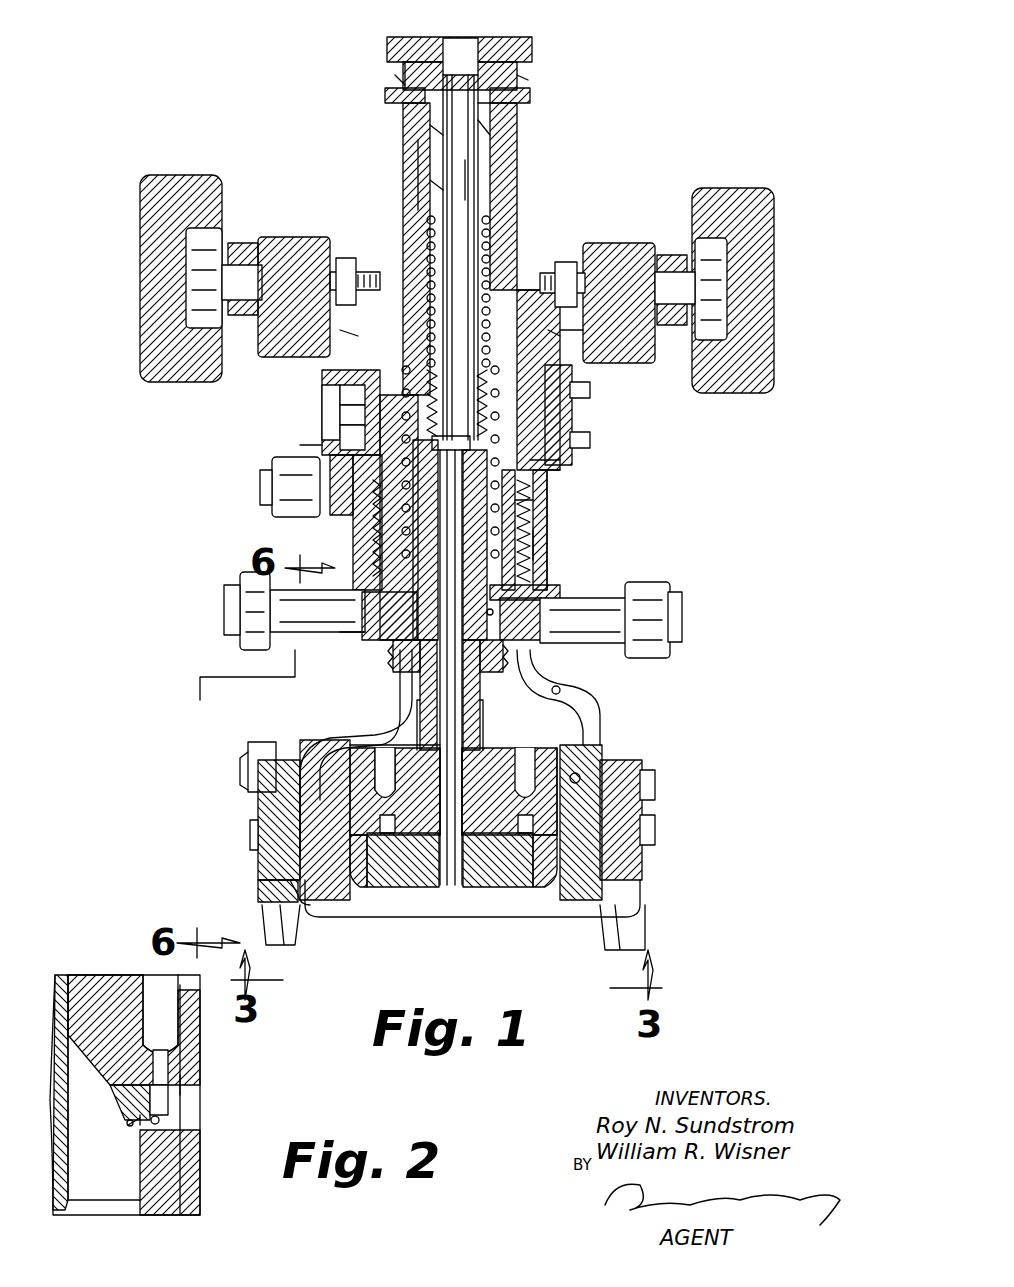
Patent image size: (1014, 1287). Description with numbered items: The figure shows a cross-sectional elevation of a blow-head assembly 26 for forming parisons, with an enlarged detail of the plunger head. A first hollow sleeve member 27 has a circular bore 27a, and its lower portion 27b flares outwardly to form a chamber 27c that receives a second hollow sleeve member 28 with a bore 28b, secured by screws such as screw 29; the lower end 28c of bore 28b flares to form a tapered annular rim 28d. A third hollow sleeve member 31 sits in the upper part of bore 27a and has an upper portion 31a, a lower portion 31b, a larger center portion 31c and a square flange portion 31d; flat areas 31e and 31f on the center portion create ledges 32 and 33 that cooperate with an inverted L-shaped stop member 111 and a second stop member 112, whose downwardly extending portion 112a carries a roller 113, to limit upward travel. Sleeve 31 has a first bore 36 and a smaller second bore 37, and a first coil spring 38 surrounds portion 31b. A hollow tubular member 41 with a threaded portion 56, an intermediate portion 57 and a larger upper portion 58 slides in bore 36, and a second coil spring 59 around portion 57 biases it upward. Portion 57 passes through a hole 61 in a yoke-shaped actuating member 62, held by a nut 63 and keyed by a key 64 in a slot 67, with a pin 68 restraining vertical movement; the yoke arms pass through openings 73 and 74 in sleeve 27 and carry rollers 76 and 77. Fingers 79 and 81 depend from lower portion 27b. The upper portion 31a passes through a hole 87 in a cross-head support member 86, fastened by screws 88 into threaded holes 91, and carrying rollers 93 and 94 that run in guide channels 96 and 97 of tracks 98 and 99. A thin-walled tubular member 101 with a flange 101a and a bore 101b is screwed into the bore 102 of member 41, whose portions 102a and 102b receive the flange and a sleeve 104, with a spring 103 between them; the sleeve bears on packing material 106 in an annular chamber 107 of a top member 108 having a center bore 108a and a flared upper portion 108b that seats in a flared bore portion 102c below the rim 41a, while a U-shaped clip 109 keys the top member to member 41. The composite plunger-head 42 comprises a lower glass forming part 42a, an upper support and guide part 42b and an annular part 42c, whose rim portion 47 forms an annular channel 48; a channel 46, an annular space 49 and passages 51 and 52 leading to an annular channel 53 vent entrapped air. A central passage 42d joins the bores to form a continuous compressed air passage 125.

In FIG. 1, the compressed air passage 125 is at (463, 55).
In FIG. 1, the top member 108 is at (532, 45).
In FIG. 1, the center bore 108a is at (492, 110).
In FIG. 1, the flared upper portion 108b is at (418, 60).
In FIG. 1, the U-shaped clip 109 is at (530, 96).
In FIG. 1, the hollow tubular member 41 is at (520, 208).
In FIG. 1, the rim 41a is at (398, 78).
In FIG. 1, the bore 102 is at (318, 445).
In FIG. 1, the bore portion 102a is at (427, 245).
In FIG. 1, the bore portion 102b is at (418, 170).
In FIG. 1, the flared bore portion 102c is at (525, 78).
In FIG. 1, the packing material 106 is at (495, 140).
In FIG. 1, the thin walled tubular member 101 is at (478, 175).
In FIG. 1, the annular flange 101a is at (345, 368).
In FIG. 1, the bore 101b is at (443, 190).
In FIG. 1, the sleeve 104 is at (485, 183).
In FIG. 1, the annular chamber 107 is at (430, 135).
In FIG. 1, the compressible spring 103 is at (427, 228).
In FIG. 1, the inverted L-shaped stop member 111 is at (530, 422).
In FIG. 1, the upper portion 58 is at (512, 232).
In FIG. 1, the third hollow sleeve member 31 is at (550, 440).
In FIG. 1, the upper portion 31a is at (522, 285).
In FIG. 1, the lower portion 31b is at (372, 530).
In FIG. 1, the center portion 31c is at (560, 478).
In FIG. 1, the square flange portion 31d is at (572, 374).
In FIG. 1, the flat area 31e is at (590, 392).
In FIG. 1, the flat area 31f is at (340, 393).
In FIG. 1, the screws 88 is at (360, 340).
In FIG. 1, the threaded holes 91 is at (340, 330).
In FIG. 1, the hole 87 is at (575, 330).
In FIG. 1, the cross-head support member 86 is at (600, 243).
In FIG. 1, the track 98 is at (180, 180).
In FIG. 1, the guide channel 96 is at (210, 240).
In FIG. 1, the roller 93 is at (218, 255).
In FIG. 1, the track 99 is at (770, 209).
In FIG. 1, the guide channel 97 is at (705, 240).
In FIG. 1, the roller 94 is at (695, 245).
In FIG. 1, the second compressible coil spring 59 is at (340, 414).
In FIG. 1, the second stop member 112 is at (340, 435).
In FIG. 1, the downwardly extending portion 112a is at (280, 470).
In FIG. 1, the roller 113 is at (275, 510).
In FIG. 1, the ledge 33 is at (330, 460).
In FIG. 1, the first compressible coil spring 38 is at (372, 548).
In FIG. 1, the ledge 32 is at (548, 460).
In FIG. 1, the blow-head assembly 26 is at (560, 510).
In FIG. 1, the first bore 36 is at (520, 520).
In FIG. 1, the first hollow sleeve member 27 is at (540, 553).
In FIG. 1, the circular bore 27a is at (530, 538).
In FIG. 1, the lower portion 27b is at (595, 735).
In FIG. 1, the chamber 27c is at (600, 760).
In FIG. 1, the second bore 37 is at (535, 572).
In FIG. 1, the pin 68 is at (490, 612).
In FIG. 1, the intermediate portion 57 is at (365, 598).
In FIG. 1, the hole 61 is at (365, 625).
In FIG. 1, the slot 67 is at (480, 606).
In FIG. 1, the yoke-shaped actuating member 62 is at (598, 626).
In FIG. 1, the roller 76 is at (252, 580).
In FIG. 1, the roller 77 is at (660, 650).
In FIG. 1, the opening 73 is at (335, 705).
In FIG. 1, the opening 74 is at (562, 690).
In FIG. 1, the nut 63 is at (405, 672).
In FIG. 1, the key 64 is at (515, 672).
In FIG. 1, the screw 29 is at (258, 745).
In FIG. 1, the second hollow sleeve member 28 is at (270, 828).
In FIG. 2, the second hollow sleeve member 28 is at (58, 990).
In FIG. 1, the circular bore 28b is at (300, 800).
In FIG. 1, the lower end of bore 28c is at (270, 905).
In FIG. 1, the annular rim 28d is at (305, 910).
In FIG. 1, the annular channel 53 is at (382, 755).
In FIG. 2, the annular channel 53 is at (176, 1008).
In FIG. 1, the lower externally threaded portion 56 is at (480, 785).
In FIG. 1, the composite plunger-head 42 is at (500, 800).
In FIG. 2, the composite plunger-head 42 is at (234, 1080).
In FIG. 1, the lower glass forming part 42a is at (512, 895).
In FIG. 2, the lower glass forming part 42a is at (192, 1188).
In FIG. 1, the upper support and guide part 42b is at (525, 760).
In FIG. 2, the upper support and guide part 42b is at (125, 1031).
In FIG. 1, the annular part 42c is at (370, 880).
In FIG. 2, the annular part 42c is at (112, 1103).
In FIG. 1, the passage 42d is at (455, 895).
In FIG. 1, the passage 52 is at (393, 818).
In FIG. 2, the passage 52 is at (168, 1065).
In FIG. 1, the passage 51 is at (450, 860).
In FIG. 2, the passage 51 is at (168, 1105).
In FIG. 1, the finger 79 is at (285, 945).
In FIG. 1, the finger 81 is at (638, 915).
In FIG. 2, the annular channel 46 is at (160, 1122).
In FIG. 2, the lower annular rim portion 47 is at (135, 1122).
In FIG. 2, the annular channel 48 is at (128, 1123).
In FIG. 2, the annular space 49 is at (142, 1124).